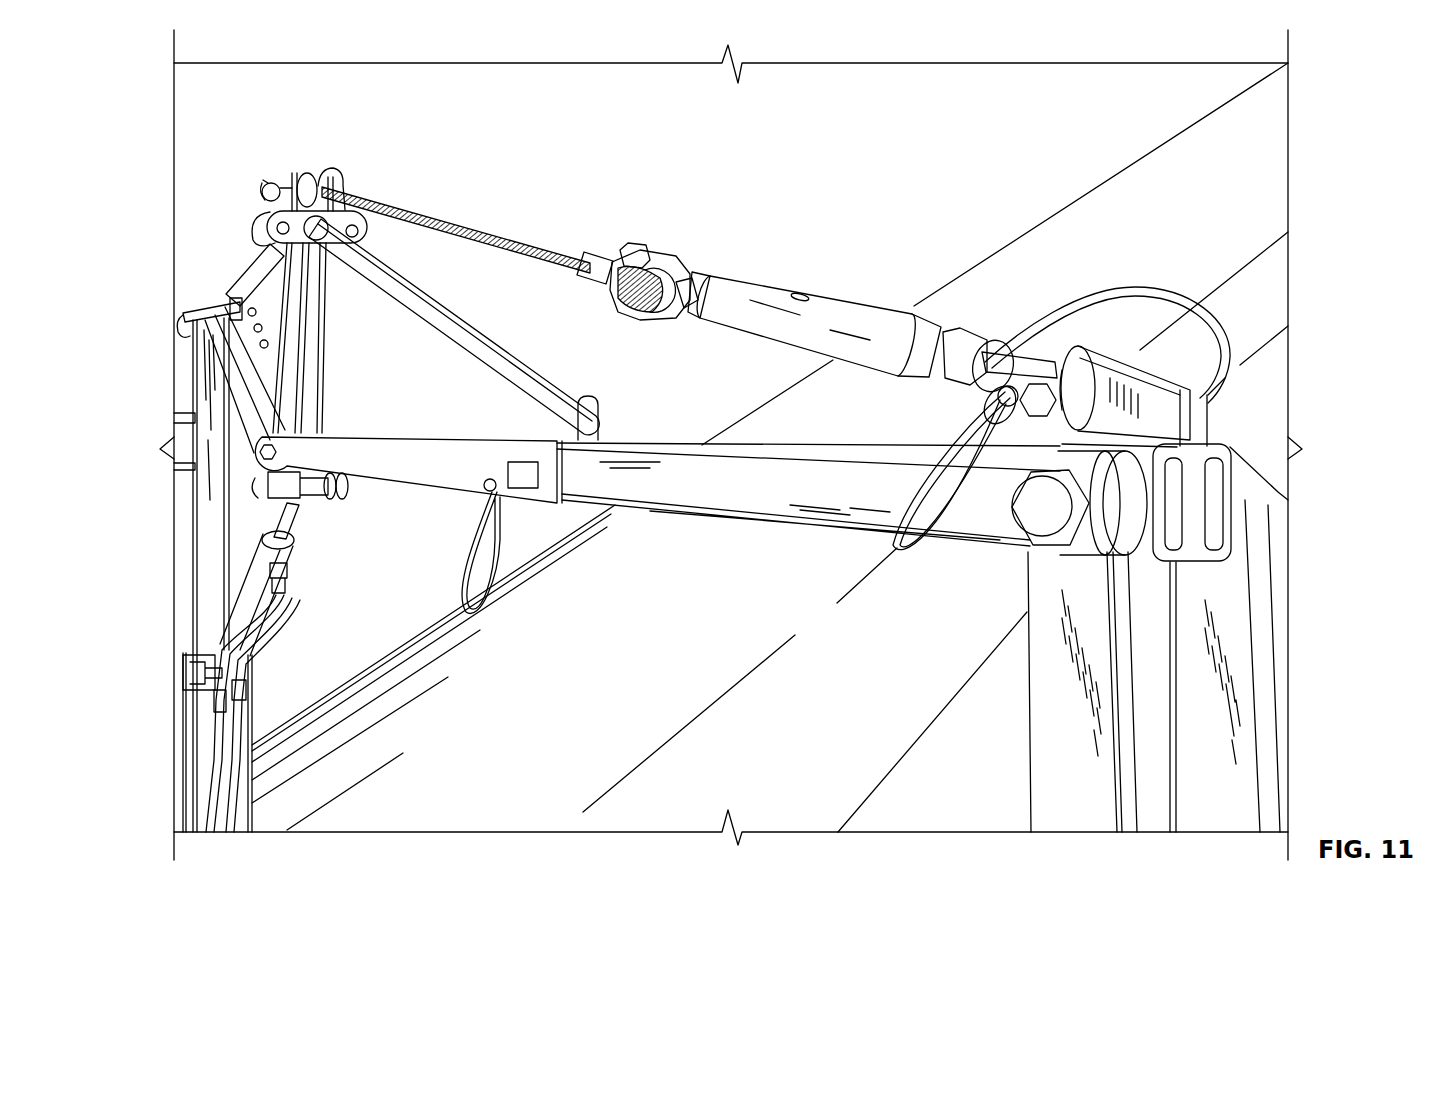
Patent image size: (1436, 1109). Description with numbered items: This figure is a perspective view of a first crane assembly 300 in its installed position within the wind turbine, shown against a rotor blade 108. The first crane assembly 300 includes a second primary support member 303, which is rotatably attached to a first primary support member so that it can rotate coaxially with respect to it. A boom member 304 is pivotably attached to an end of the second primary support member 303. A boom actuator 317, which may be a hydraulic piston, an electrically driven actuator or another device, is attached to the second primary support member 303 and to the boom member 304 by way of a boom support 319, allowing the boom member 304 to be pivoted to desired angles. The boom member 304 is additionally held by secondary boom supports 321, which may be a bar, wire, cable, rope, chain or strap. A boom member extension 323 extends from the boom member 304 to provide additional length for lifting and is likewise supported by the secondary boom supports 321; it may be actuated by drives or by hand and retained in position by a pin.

The rotor blade 108 is at (1095, 232).
The first crane assembly 300 is at (668, 221).
The secondary boom supports 321 is at (442, 220).
The boom support 319 is at (312, 343).
The boom member 304 is at (427, 465).
The boom member extension 323 is at (752, 498).
The second primary support member 303 is at (290, 545).
The boom actuator 317 is at (283, 573).